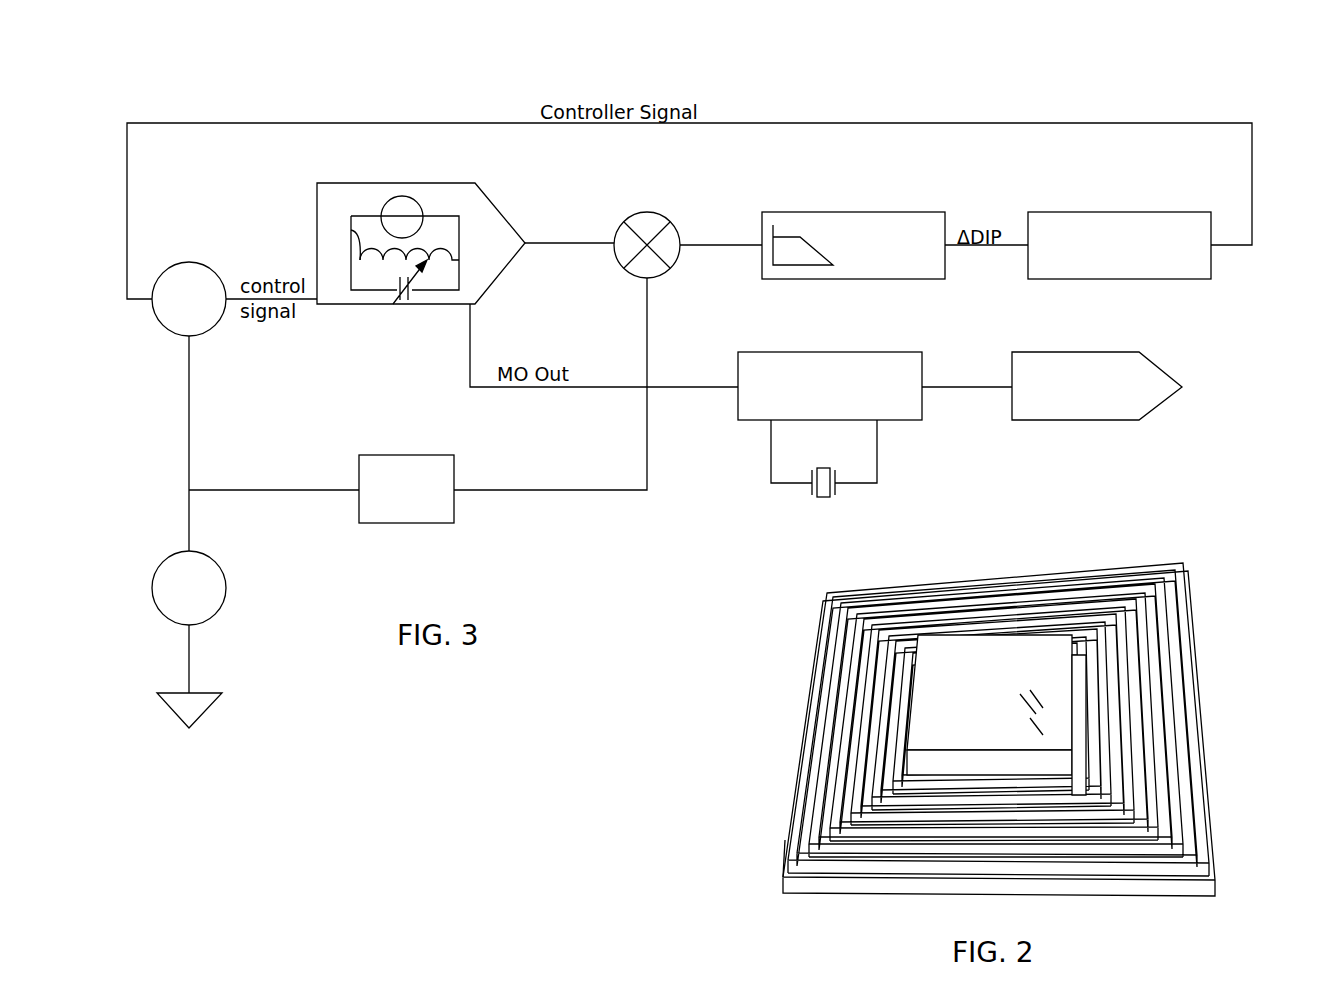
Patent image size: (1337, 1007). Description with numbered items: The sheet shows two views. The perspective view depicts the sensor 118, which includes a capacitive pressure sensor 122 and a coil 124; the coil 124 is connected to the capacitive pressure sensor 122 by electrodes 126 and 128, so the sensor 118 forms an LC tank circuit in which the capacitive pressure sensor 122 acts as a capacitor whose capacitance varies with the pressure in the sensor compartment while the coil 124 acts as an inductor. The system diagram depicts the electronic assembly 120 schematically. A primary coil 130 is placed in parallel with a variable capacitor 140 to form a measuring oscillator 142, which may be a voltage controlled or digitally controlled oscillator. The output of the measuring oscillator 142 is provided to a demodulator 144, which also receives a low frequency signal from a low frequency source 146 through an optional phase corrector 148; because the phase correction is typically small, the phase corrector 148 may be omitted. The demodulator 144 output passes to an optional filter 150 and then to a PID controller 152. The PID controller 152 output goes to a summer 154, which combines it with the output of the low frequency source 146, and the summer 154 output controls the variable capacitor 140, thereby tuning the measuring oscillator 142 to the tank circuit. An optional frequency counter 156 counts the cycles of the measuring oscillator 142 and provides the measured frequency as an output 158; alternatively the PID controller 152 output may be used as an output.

In FIG. 2, the sensor 118 is at (1157, 571).
In FIG. 3, the electronic assembly 120 is at (1199, 96).
In FIG. 2, the capacitive pressure sensor 122 is at (908, 715).
In FIG. 2, the coil 124 is at (1196, 652).
In FIG. 2, the electrode 126 is at (1060, 787).
In FIG. 2, the electrode 128 is at (980, 636).
In FIG. 3, the primary coil 130 is at (352, 230).
In FIG. 2, the primary coil 130 is at (785, 840).
In FIG. 3, the variable capacitor 140 is at (430, 305).
In FIG. 3, the measuring oscillator 142 is at (513, 228).
In FIG. 3, the demodulator 144 is at (672, 225).
In FIG. 3, the low frequency source 146 is at (222, 573).
In FIG. 3, the phase corrector 148 is at (454, 520).
In FIG. 3, the filter 150 is at (935, 212).
In FIG. 3, the PID controller 152 is at (1073, 212).
In FIG. 3, the summer 154 is at (195, 262).
In FIG. 3, the frequency counter 156 is at (880, 352).
In FIG. 3, the output 158 is at (1152, 362).